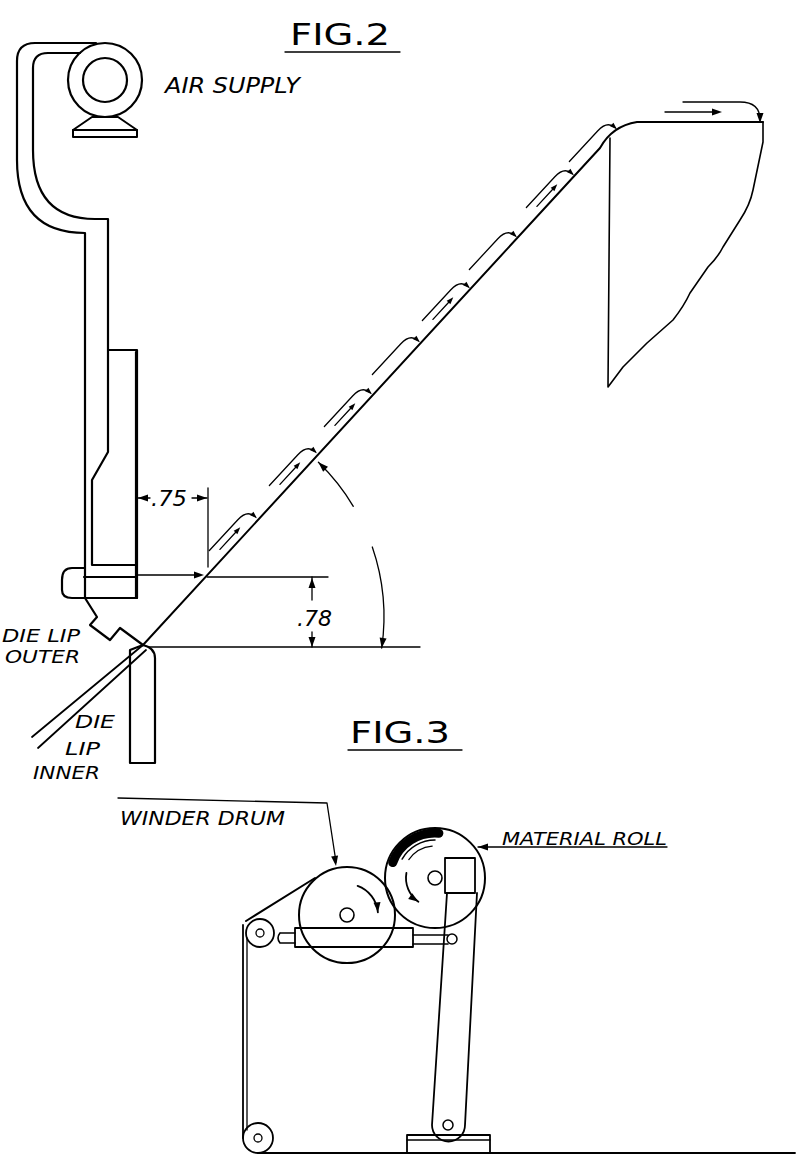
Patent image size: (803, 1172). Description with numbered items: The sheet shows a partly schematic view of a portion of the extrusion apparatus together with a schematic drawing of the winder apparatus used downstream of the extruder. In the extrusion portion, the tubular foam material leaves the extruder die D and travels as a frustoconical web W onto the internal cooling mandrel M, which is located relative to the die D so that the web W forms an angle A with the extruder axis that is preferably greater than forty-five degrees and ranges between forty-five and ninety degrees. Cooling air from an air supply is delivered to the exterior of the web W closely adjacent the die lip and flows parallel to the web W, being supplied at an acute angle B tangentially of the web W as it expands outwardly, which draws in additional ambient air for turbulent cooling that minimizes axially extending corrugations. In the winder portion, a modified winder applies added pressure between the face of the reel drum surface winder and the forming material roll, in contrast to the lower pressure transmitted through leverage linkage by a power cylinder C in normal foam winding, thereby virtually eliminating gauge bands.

In FIG. 2, the angle A is at (351, 554).
In FIG. 2, the acute angle B is at (142, 535).
In FIG. 3, the power cylinder C is at (397, 937).
In FIG. 2, the extruder die D is at (158, 705).
In FIG. 2, the web W is at (400, 366).
In FIG. 2, the internal cooling mandrel M is at (685, 254).